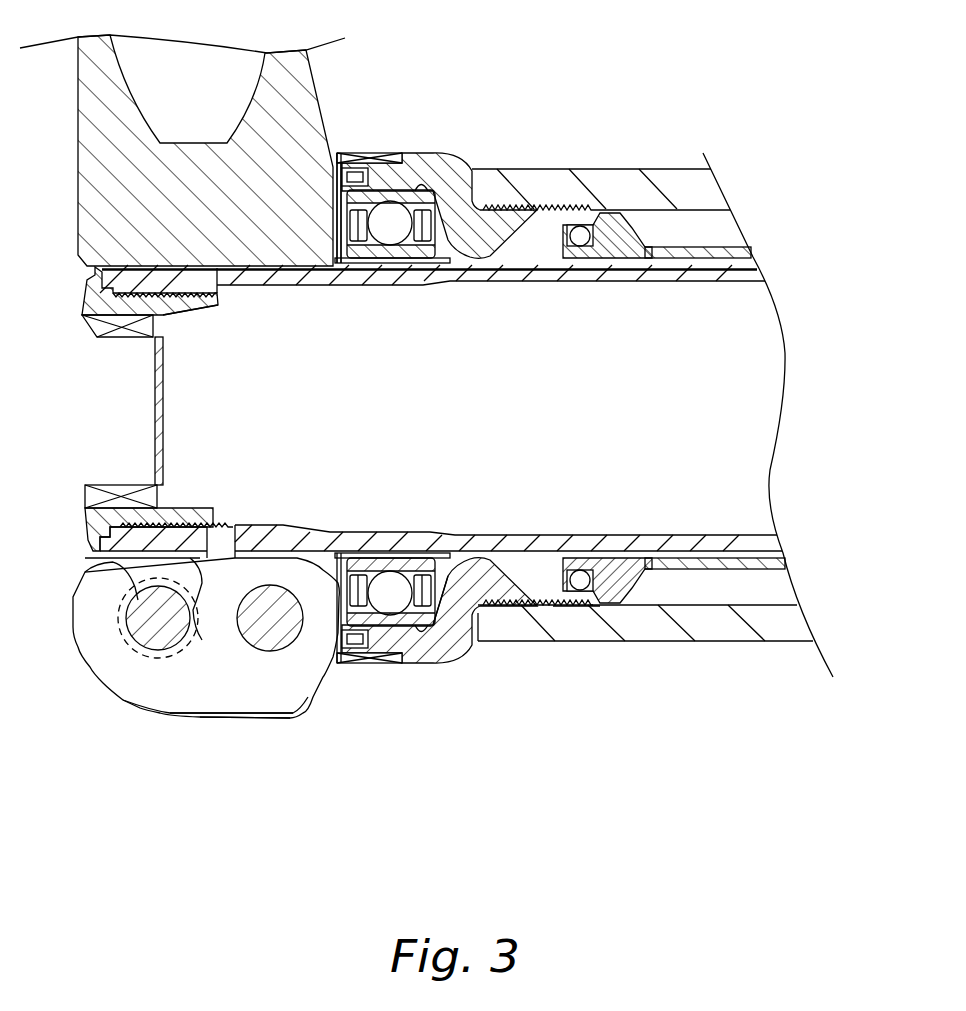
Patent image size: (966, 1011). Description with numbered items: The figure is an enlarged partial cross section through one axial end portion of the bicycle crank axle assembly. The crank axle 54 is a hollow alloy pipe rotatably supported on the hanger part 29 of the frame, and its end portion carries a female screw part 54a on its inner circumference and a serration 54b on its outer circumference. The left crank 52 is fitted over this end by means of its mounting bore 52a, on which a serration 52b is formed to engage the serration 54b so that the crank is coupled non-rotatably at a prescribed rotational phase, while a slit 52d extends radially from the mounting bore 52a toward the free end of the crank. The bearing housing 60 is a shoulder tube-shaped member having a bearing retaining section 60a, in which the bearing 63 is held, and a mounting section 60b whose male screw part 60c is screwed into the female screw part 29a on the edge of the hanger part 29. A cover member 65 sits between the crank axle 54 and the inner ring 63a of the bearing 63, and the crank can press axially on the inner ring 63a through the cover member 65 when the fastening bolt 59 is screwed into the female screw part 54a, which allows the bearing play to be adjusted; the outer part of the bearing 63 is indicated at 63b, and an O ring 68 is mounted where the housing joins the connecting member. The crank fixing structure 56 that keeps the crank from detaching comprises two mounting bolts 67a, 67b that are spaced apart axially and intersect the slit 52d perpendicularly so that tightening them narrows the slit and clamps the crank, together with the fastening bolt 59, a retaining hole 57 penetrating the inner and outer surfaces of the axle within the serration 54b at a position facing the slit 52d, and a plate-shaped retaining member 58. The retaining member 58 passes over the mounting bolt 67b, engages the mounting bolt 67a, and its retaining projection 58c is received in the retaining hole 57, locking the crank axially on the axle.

The hanger part 29 is at (672, 643).
The left female screw part 29a is at (573, 604).
The left crank 52 is at (316, 70).
The mounting bore 52a is at (253, 272).
The serration 52b is at (218, 296).
The slit 52d is at (163, 713).
The crank axle 54 is at (318, 572).
The female screw part 54a is at (178, 300).
The serration 54b is at (147, 253).
The crank fixing structure 56 is at (172, 723).
The retaining hole 57 is at (215, 532).
The retaining member 58 is at (208, 697).
The retaining projection 58c is at (211, 526).
The fastening bolt 59 is at (157, 447).
The right bearing housing 60 is at (437, 131).
The bearing retaining section 60a is at (403, 660).
The mounting section 60b is at (528, 595).
The male screw part 60c is at (552, 207).
The bearing 63 is at (422, 177).
The inner ring 63a is at (428, 627).
The inner race of bearing 63b is at (403, 645).
The cover member 65 is at (342, 263).
The mounting bolt 67a is at (152, 622).
The mounting bolt 67b is at (263, 633).
The O ring 68 is at (583, 577).